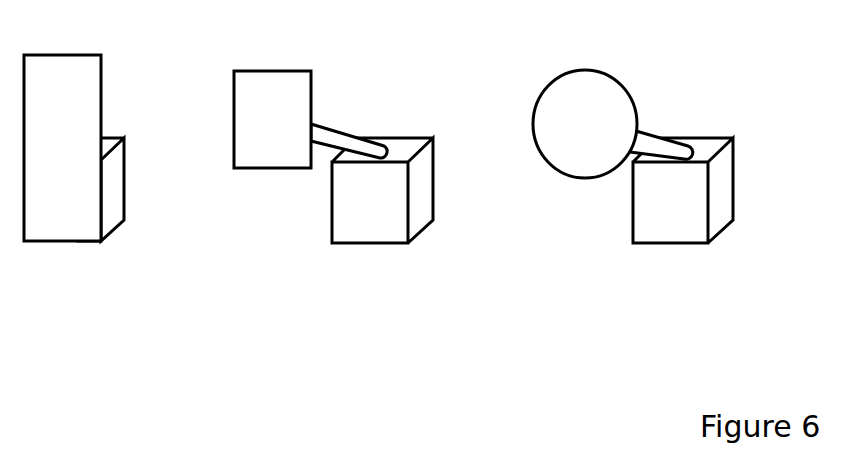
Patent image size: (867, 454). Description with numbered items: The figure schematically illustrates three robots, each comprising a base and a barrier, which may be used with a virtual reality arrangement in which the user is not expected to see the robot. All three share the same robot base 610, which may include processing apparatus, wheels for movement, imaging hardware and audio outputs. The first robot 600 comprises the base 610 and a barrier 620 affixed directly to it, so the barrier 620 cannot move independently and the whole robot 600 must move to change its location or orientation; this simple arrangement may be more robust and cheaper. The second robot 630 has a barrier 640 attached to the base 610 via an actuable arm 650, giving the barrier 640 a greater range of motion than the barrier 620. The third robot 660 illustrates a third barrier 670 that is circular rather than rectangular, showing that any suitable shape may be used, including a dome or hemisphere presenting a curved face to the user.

The first robot 600 is at (104, 205).
The robot base 610 is at (124, 185).
The barrier 620 is at (62, 148).
The second robot 630 is at (333, 187).
The barrier 640 is at (272, 119).
The actuable arm 650 is at (322, 128).
The third robot 660 is at (633, 213).
The third barrier 670 is at (585, 124).